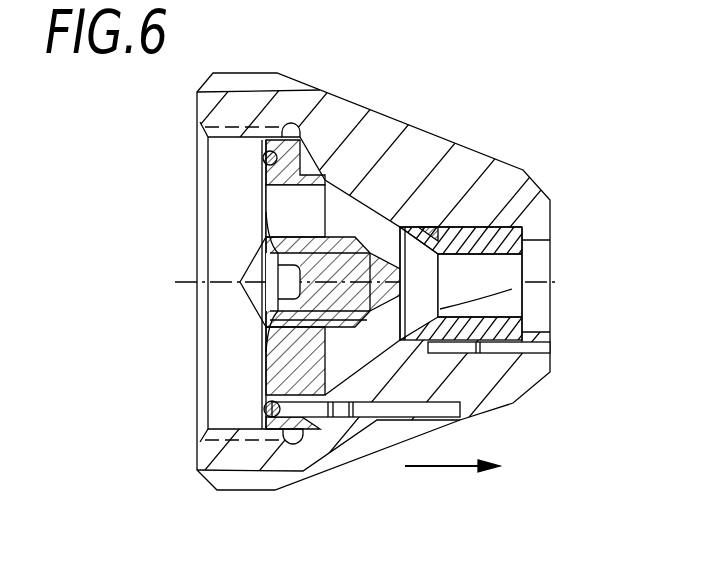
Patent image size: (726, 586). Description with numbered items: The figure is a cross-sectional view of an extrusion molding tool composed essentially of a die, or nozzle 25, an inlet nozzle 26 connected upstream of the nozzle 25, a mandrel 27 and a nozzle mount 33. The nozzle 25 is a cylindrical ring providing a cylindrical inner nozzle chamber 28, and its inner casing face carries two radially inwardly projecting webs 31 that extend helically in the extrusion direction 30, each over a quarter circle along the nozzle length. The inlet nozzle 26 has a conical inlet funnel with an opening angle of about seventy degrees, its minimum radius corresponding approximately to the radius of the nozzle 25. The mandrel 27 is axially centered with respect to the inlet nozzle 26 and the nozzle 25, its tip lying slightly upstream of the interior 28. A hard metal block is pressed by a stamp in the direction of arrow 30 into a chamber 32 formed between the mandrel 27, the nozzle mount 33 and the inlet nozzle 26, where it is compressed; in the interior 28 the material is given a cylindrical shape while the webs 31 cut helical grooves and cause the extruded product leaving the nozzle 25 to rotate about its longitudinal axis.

The nozzle 25 is at (540, 193).
The inlet nozzle 26 is at (432, 227).
The mandrel 27 is at (366, 257).
The inner nozzle chamber 28 is at (510, 267).
The extrusion direction 30 is at (443, 467).
The web 31 is at (507, 302).
The chamber 32 is at (345, 207).
The nozzle mount 33 is at (493, 182).